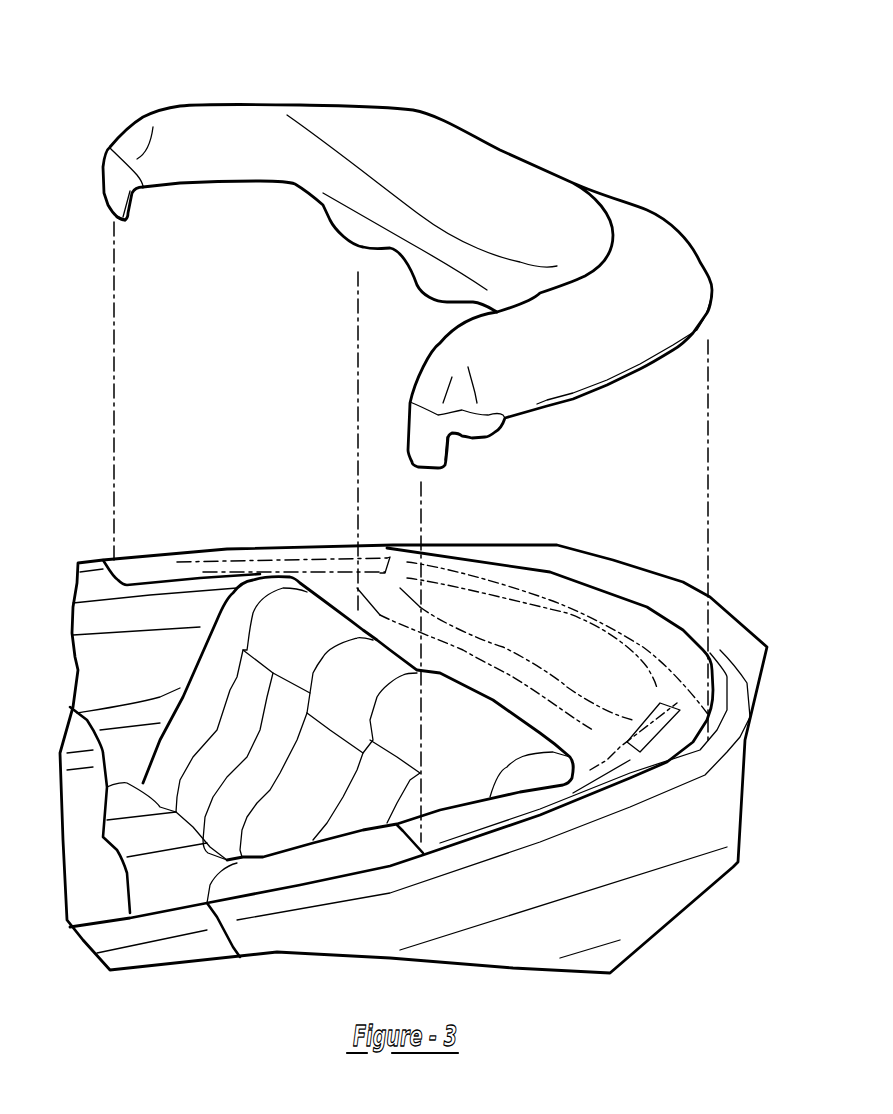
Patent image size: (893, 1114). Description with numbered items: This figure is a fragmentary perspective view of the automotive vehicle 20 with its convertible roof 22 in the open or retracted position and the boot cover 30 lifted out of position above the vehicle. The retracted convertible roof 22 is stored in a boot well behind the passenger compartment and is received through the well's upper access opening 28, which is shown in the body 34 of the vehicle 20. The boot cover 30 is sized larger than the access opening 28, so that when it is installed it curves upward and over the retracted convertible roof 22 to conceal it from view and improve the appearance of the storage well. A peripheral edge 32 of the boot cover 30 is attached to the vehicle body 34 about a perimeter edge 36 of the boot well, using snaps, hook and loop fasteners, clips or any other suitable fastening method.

The automotive vehicle 20 is at (413, 745).
The convertible roof 22 is at (609, 677).
The upper access opening 28 is at (506, 628).
The boot cover 30 is at (343, 106).
The peripheral edge 32 is at (558, 408).
The body 34 is at (563, 887).
The perimeter edge 36 is at (643, 607).